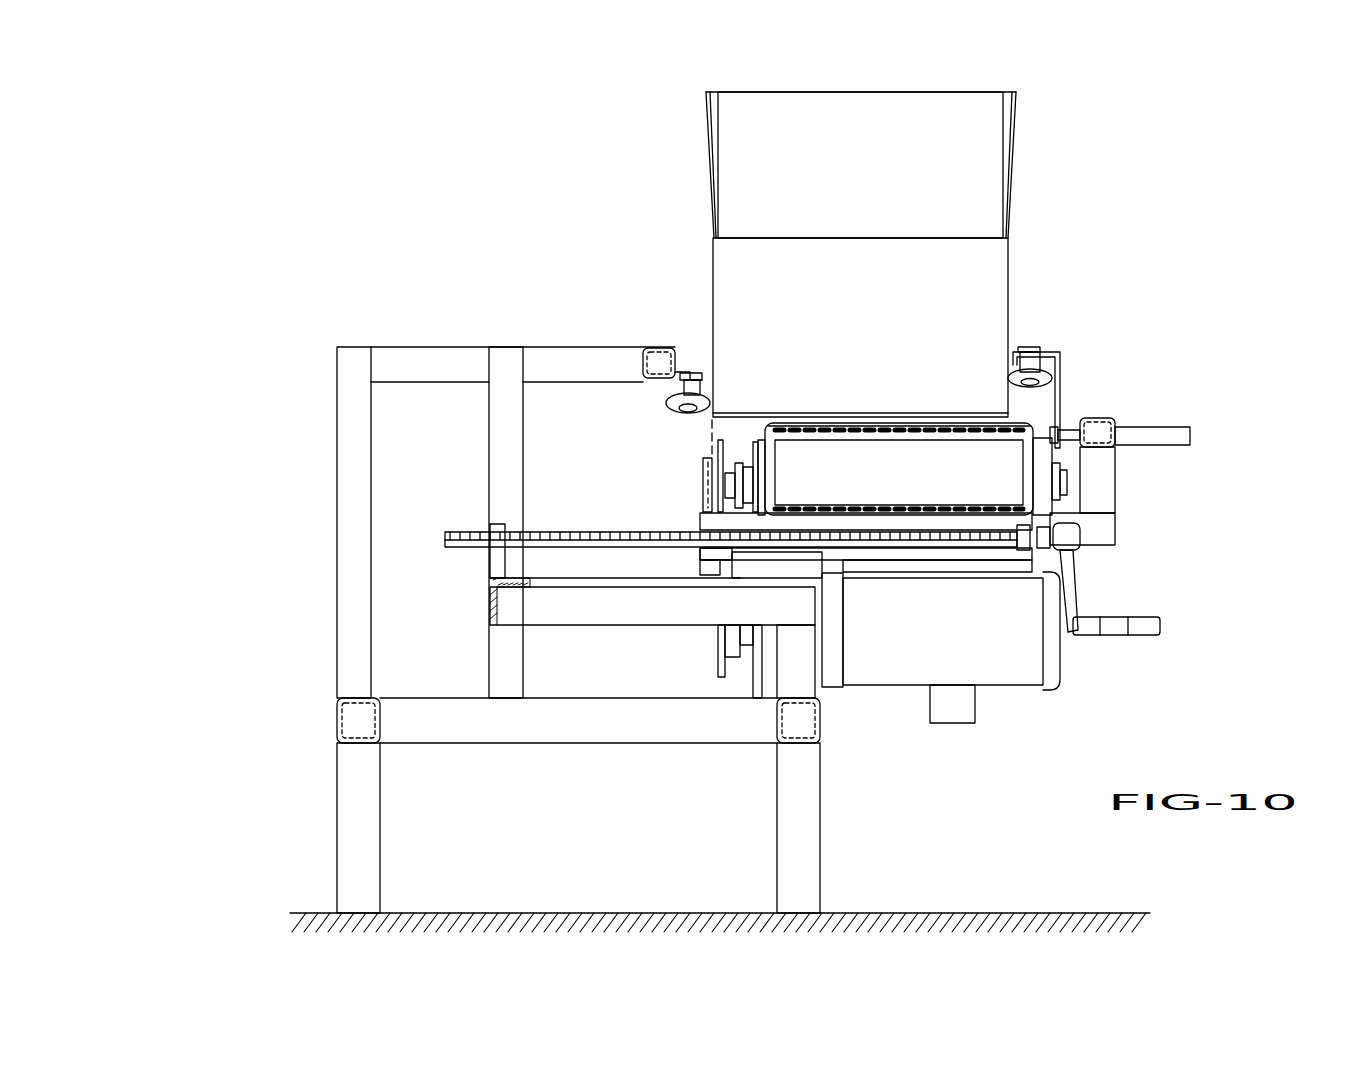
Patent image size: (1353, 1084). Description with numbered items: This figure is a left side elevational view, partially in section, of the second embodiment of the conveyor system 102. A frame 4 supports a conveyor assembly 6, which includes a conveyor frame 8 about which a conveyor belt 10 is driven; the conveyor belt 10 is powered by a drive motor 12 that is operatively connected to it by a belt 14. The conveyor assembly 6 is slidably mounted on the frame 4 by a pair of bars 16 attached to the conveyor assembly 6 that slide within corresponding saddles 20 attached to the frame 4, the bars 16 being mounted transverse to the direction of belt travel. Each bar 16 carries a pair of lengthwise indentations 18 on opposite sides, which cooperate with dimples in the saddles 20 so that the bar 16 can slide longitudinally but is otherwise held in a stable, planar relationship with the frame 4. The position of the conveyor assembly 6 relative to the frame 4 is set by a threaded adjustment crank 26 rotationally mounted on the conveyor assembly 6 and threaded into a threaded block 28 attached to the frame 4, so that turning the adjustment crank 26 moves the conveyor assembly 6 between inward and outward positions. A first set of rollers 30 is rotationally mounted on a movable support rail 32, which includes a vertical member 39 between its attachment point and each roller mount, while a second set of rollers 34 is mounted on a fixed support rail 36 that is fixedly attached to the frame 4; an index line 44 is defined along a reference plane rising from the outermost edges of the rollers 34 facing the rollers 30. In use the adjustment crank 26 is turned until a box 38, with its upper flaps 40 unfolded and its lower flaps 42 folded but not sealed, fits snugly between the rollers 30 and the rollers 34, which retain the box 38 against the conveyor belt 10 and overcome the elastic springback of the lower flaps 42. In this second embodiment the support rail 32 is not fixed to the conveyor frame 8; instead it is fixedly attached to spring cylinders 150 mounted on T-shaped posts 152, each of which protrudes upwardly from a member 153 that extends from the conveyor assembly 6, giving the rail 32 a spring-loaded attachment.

The conveyor system 102 is at (318, 245).
The frame 4 is at (330, 568).
The upper flaps 40 is at (748, 157).
The box 38 is at (990, 265).
The second set of rollers 34 is at (705, 402).
The fixed support rail 36 is at (680, 378).
The index line 44 is at (712, 430).
The first set of rollers 30 is at (1010, 378).
The vertical member 39 is at (1062, 368).
The movable support rail 32 is at (1070, 348).
The conveyor belt 10 is at (875, 417).
The lower flaps 42 is at (826, 418).
The conveyor frame 8 is at (785, 420).
The threaded adjustment crank 26 is at (635, 530).
The threaded block 28 is at (497, 545).
The saddles 20 is at (790, 570).
The indentations 18 is at (985, 556).
The bars 16 is at (940, 570).
The drive motor 12 is at (1005, 673).
The belt 14 is at (720, 660).
The conveyor assembly 6 is at (1135, 522).
The spring cylinders 150 is at (1157, 432).
The T-shaped posts 152 is at (1103, 488).
The member 153 is at (1100, 540).